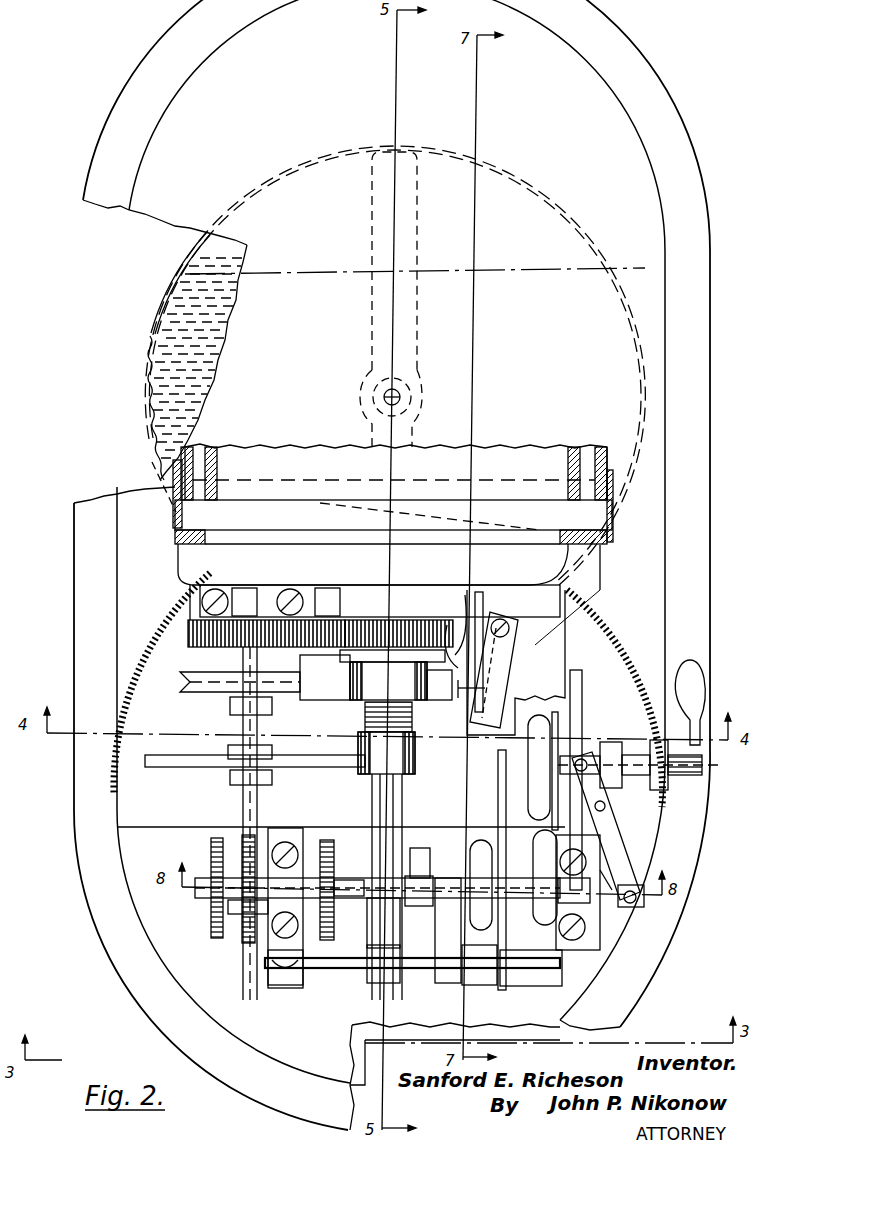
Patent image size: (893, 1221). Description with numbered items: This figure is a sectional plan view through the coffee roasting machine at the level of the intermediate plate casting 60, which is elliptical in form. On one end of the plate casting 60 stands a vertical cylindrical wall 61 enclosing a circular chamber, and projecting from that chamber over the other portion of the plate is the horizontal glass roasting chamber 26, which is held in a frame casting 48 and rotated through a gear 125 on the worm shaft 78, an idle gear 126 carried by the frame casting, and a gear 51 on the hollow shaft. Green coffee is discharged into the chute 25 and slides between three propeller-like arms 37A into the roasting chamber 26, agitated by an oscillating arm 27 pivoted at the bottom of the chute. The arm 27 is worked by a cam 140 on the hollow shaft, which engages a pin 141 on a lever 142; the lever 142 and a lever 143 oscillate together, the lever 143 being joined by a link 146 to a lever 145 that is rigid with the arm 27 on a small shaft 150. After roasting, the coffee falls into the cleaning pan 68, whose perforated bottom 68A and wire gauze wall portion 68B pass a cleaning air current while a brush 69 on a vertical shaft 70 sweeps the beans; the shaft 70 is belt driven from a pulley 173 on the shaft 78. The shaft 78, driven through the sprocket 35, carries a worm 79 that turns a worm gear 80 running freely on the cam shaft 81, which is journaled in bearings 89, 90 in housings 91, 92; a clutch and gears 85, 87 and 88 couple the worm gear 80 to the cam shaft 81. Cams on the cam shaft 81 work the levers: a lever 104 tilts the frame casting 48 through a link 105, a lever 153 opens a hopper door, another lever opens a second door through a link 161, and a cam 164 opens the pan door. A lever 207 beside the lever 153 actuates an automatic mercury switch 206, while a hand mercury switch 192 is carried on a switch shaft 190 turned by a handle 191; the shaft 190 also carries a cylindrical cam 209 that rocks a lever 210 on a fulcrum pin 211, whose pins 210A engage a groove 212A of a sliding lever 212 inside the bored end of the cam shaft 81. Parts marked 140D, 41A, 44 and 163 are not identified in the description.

The intermediate plate casting 60 is at (710, 215).
The cleaning pan 68 is at (192, 246).
The perforated bottom 68A is at (180, 306).
The wire gauze wall portion 68B is at (147, 350).
The brush 69 is at (415, 322).
The vertical shaft 70 is at (412, 395).
The roasting chamber 26 is at (393, 493).
The arms 37A is at (425, 527).
The frame casting 48 is at (389, 594).
The vertical cylindrical wall 61 is at (618, 668).
The pin 141 is at (412, 620).
The gear 51 is at (400, 630).
The gear 125 is at (214, 645).
The idle gear 126 is at (290, 647).
The lever 142 is at (462, 628).
The chute 25 is at (516, 662).
The small shaft 150 is at (508, 633).
The oscillating arm 27 is at (494, 670).
The lever 145 is at (486, 688).
The cam 140 is at (350, 660).
The clutch detent 140D is at (447, 685).
The threaded sleeve 41A is at (364, 715).
The lever 143 is at (427, 710).
The pin 44 is at (434, 723).
The link 146 is at (463, 720).
The shaft 78 is at (258, 797).
The pulley 173 is at (210, 694).
The sprocket 35 is at (186, 766).
The link 105 is at (396, 825).
The link 161 is at (498, 812).
The mercury switch 192 is at (528, 752).
The cylindrical cam 209 is at (585, 758).
The switch shaft 190 is at (700, 770).
The handle 191 is at (702, 692).
The lever 210 is at (610, 822).
The fulcrum pin 211 is at (606, 806).
The pins 210A is at (636, 905).
The groove 212A is at (630, 920).
The lever 212 is at (588, 899).
The bearing 90 is at (590, 915).
The housing 92 is at (566, 955).
The lever 207 is at (480, 983).
The cam shaft 81 is at (348, 886).
The gear 85 is at (210, 852).
The worm gear 80 is at (249, 945).
The worm 79 is at (236, 915).
The bearing 89 is at (296, 918).
The housing 91 is at (292, 940).
The gear 87 is at (334, 868).
The gear 88 is at (334, 936).
The cam 164 is at (399, 923).
The lever 104 is at (394, 937).
The cam 163 is at (430, 850).
The lever 153 is at (452, 930).
The mercury switch 206 is at (475, 858).